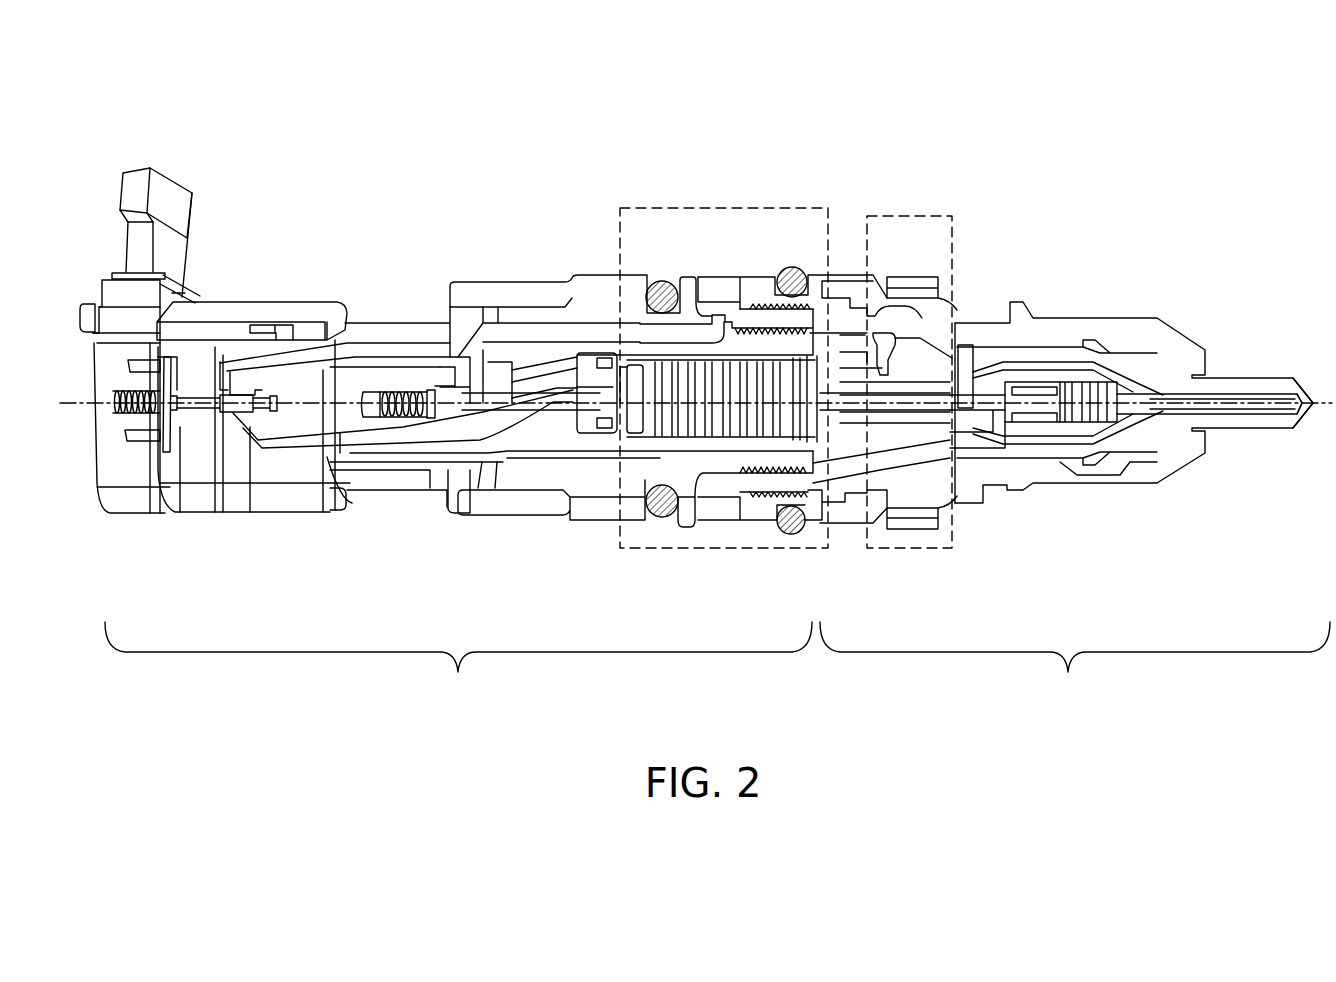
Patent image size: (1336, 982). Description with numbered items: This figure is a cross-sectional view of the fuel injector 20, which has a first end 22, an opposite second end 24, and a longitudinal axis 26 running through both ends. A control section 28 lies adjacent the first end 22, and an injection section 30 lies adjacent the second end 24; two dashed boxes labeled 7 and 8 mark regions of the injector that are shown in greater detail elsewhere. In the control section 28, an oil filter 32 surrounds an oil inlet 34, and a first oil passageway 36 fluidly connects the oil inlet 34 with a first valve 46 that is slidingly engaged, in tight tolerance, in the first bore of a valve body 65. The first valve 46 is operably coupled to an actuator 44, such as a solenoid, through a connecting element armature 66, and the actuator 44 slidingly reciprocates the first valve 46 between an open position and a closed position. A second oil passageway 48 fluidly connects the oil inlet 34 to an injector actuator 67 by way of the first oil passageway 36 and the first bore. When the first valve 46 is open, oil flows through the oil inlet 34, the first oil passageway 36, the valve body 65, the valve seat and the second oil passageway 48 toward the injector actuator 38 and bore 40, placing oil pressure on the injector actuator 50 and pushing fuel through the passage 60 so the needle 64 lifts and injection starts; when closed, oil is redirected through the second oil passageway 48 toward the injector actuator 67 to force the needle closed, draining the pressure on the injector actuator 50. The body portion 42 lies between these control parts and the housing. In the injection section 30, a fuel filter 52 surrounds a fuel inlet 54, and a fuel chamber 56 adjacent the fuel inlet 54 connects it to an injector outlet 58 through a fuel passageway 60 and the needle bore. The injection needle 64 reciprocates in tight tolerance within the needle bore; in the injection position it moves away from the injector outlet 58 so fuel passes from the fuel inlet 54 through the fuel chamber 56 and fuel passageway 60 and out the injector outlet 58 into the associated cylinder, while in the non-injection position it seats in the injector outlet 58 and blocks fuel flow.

The fuel injector 20 is at (1130, 144).
The first end 22 is at (93, 380).
The second end 24 is at (1313, 403).
The longitudinal axis 26 is at (72, 405).
The control section 28 is at (458, 665).
The injection section 30 is at (1075, 665).
The oil filter 32 is at (721, 286).
The oil inlet 34 is at (702, 292).
The first oil passageway 36 is at (538, 330).
The injector actuator 38 is at (400, 393).
The bore 40 is at (433, 397).
The body 42 is at (372, 467).
The actuator 44 is at (172, 293).
The first valve 46 is at (272, 370).
The second oil passageway 48 is at (424, 456).
The injector actuator 50 is at (604, 428).
The fuel filter 52 is at (906, 290).
The fuel inlet 54 is at (950, 300).
The fuel chamber 56 is at (905, 330).
The injector outlet 58 is at (1313, 403).
The fuel passageway 60 is at (1140, 382).
The injection needle 64 is at (1256, 418).
The valve body 65 is at (200, 355).
The armature 66 is at (180, 465).
The injector actuator 67 is at (1022, 418).
The detail region of FIG. 7 is at (684, 556).
The detail region of FIG. 8 is at (902, 556).